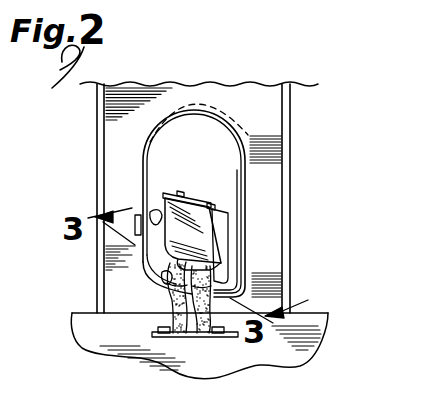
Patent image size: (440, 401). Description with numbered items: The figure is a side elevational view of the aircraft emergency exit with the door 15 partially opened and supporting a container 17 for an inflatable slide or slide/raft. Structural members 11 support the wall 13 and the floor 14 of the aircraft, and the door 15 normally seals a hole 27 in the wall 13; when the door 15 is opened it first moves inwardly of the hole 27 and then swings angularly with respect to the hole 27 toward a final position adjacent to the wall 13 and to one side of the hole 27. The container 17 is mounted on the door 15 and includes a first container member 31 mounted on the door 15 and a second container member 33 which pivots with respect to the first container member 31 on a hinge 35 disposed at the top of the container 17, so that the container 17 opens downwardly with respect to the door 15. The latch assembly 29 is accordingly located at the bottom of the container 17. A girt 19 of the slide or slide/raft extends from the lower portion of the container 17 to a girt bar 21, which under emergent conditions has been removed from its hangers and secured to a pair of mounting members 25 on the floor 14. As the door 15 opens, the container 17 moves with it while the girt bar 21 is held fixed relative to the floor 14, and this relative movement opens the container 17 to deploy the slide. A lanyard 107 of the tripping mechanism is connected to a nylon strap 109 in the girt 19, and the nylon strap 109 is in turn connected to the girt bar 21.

The structural members 11 is at (100, 120).
The wall 13 is at (261, 103).
The floor 14 is at (307, 321).
The door 15 is at (206, 131).
The container 17 is at (208, 191).
The girt 19 is at (166, 297).
The girt bar 21 is at (205, 340).
The mounting members 25 is at (163, 340).
The hole 27 is at (133, 203).
The latch assembly 29 is at (221, 255).
The first container member 31 is at (243, 212).
The second container member 33 is at (219, 235).
The hinge 35 is at (208, 199).
The lanyard 107 is at (103, 262).
The nylon strap 109 is at (170, 319).